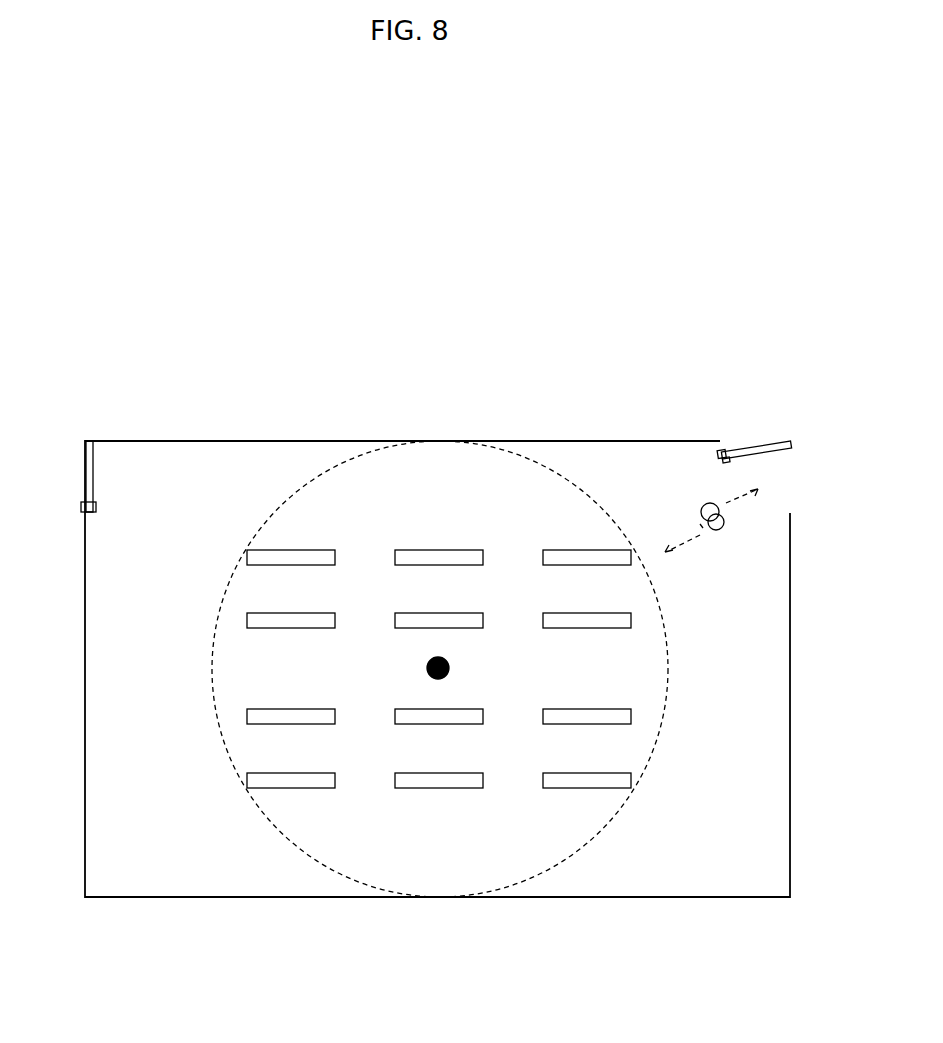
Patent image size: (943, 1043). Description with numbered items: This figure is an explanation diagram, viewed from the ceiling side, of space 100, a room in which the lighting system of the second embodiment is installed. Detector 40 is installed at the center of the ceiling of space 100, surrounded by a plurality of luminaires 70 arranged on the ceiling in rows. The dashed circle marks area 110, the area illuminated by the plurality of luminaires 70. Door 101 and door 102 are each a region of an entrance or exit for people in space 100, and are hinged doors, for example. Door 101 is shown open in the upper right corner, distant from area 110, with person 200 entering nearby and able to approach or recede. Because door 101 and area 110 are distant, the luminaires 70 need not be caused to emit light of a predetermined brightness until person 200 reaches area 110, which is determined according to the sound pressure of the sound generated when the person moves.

The space 100 is at (790, 667).
The door 101 is at (753, 450).
The door 102 is at (82, 476).
The area 110 is at (572, 483).
The person 200 is at (714, 504).
The detector 40 is at (426, 669).
The luminaires 70 is at (291, 550).